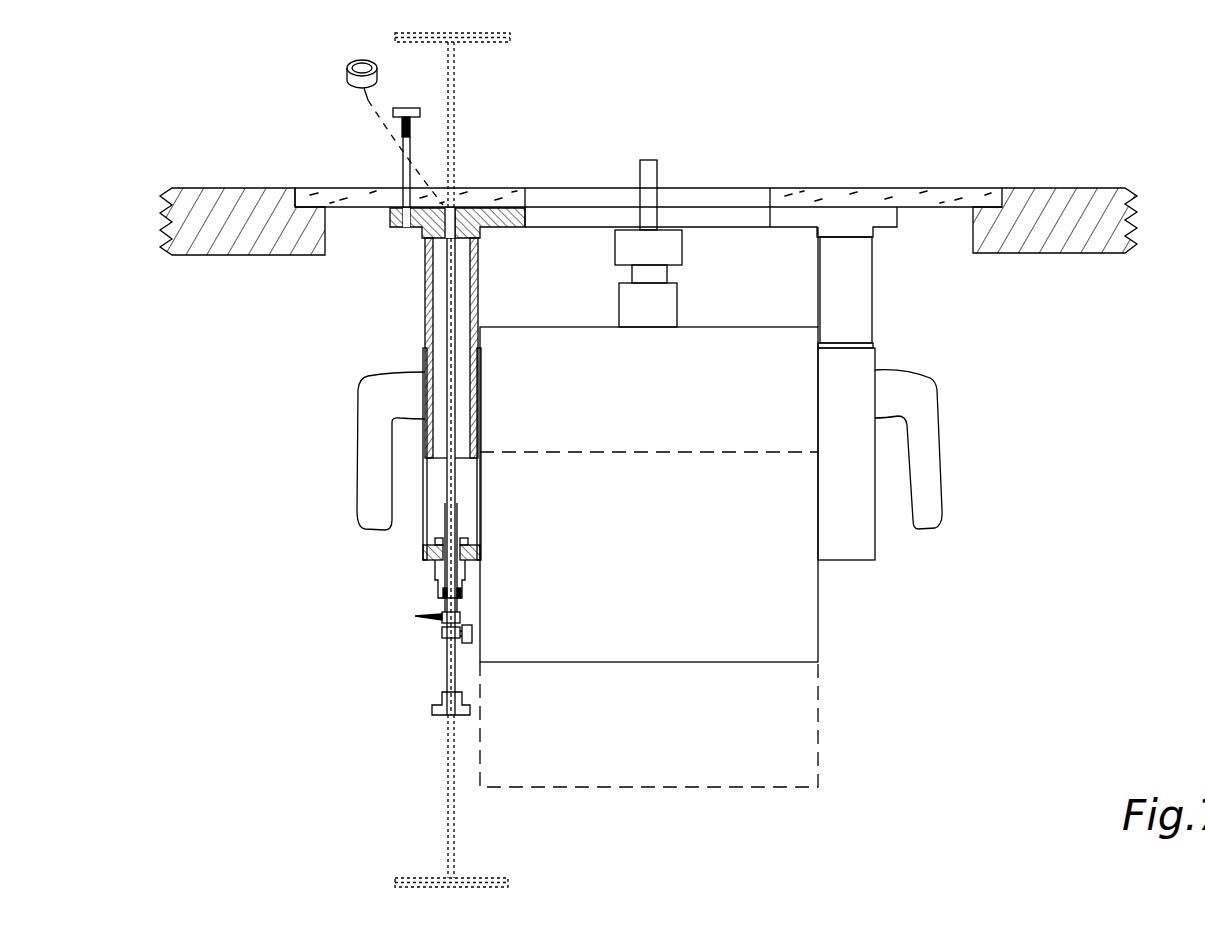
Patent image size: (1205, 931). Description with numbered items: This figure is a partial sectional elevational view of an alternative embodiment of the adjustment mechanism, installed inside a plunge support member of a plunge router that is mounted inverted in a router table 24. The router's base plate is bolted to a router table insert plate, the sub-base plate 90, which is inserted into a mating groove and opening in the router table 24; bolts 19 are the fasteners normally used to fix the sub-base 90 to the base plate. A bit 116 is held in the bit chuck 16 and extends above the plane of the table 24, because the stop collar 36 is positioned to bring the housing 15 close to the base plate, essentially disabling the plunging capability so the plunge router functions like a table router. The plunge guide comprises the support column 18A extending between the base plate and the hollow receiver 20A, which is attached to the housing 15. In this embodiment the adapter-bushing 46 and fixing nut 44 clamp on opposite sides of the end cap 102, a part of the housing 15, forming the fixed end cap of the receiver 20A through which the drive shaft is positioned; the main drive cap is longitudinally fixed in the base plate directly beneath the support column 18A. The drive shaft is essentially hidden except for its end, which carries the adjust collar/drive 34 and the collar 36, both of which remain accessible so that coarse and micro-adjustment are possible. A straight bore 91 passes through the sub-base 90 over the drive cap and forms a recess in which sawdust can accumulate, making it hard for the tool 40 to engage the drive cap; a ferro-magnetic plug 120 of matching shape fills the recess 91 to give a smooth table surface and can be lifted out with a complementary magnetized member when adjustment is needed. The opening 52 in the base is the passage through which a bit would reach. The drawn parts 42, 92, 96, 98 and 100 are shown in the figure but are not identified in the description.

The housing 15 is at (818, 630).
The bit chuck 16 is at (668, 298).
The support column 18A is at (428, 318).
The bolts 19 is at (443, 208).
The receiver 20A is at (424, 360).
The router table 24 is at (1068, 188).
The adjust collar/drive 34 is at (432, 708).
The stop collar 36 is at (440, 632).
The tool 40 is at (456, 96).
The rod 42 is at (458, 512).
The fixing nut 44 is at (440, 618).
The adapter-bushing 46 is at (433, 545).
The opening 52 is at (535, 218).
The sub-base plate 90 is at (930, 188).
The straight bore 91 is at (458, 192).
The wall recess 92 is at (973, 240).
The mounting block 96 is at (408, 228).
The plate opening 98 is at (772, 196).
The nut 100 is at (428, 508).
The end cap 102 is at (436, 560).
The bit 116 is at (648, 170).
The ferro-magnetic plug 120 is at (362, 62).